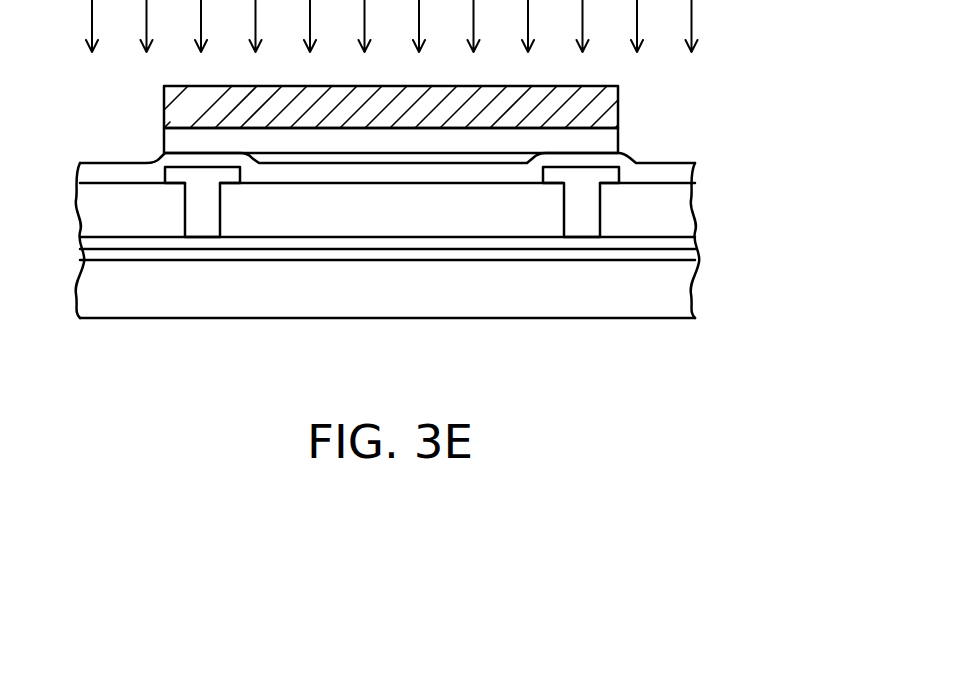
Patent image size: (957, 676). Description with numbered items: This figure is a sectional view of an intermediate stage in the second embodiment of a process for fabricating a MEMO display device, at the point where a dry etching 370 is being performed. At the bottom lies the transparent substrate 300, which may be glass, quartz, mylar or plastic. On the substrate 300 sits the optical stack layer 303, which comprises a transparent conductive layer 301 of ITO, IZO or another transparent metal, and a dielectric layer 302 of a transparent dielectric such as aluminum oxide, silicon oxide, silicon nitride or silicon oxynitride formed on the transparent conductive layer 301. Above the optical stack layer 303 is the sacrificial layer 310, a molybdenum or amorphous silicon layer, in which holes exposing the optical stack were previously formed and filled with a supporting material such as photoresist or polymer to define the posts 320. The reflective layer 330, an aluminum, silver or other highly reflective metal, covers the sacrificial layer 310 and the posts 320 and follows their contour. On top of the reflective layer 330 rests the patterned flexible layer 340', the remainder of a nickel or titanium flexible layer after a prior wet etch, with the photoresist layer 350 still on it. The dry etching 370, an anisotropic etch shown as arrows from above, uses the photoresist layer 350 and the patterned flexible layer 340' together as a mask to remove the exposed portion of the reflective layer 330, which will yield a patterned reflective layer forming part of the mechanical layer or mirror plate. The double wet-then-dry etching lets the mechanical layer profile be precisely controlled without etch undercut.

The transparent substrate 300 is at (648, 304).
The transparent conductive layer 301 is at (693, 254).
The dielectric layer 302 is at (692, 242).
The optical stack layer 303 is at (462, 259).
The sacrificial layer 310 is at (680, 208).
The posts 320 is at (202, 228).
The reflective layer 330 is at (680, 172).
The patterned flexible layer 340' is at (451, 143).
The photoresist layer 350 is at (612, 101).
The dry etching 370 is at (692, 21).